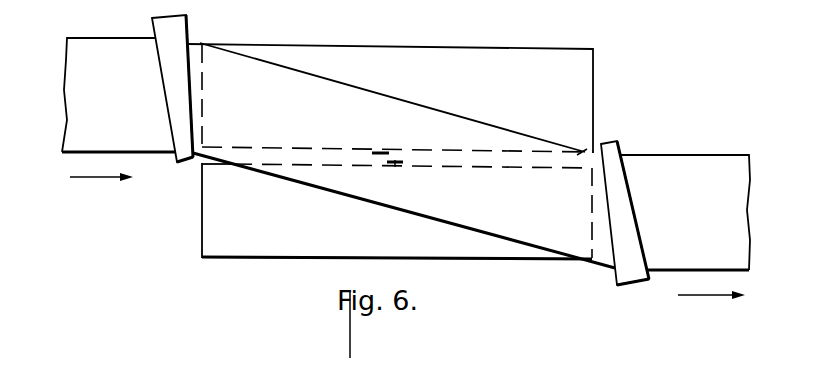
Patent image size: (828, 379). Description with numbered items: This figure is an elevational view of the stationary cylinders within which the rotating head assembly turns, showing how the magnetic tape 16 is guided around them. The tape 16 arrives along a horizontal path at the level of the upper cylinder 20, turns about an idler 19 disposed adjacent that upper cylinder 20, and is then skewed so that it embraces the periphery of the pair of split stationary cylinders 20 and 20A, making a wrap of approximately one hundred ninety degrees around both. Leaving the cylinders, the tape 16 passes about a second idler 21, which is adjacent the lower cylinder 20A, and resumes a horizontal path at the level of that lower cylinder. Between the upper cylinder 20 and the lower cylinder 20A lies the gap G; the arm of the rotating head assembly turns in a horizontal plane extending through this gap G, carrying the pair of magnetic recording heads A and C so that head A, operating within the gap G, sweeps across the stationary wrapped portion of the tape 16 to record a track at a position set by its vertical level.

The tape 16 is at (360, 95).
The idler 19 is at (177, 164).
The upper cylinder 20 is at (593, 67).
The lower cylinder 20A is at (268, 260).
The idler 21 is at (623, 287).
The magnetic recording head A is at (375, 151).
The magnetic recording head C is at (397, 167).
The gap G is at (585, 157).